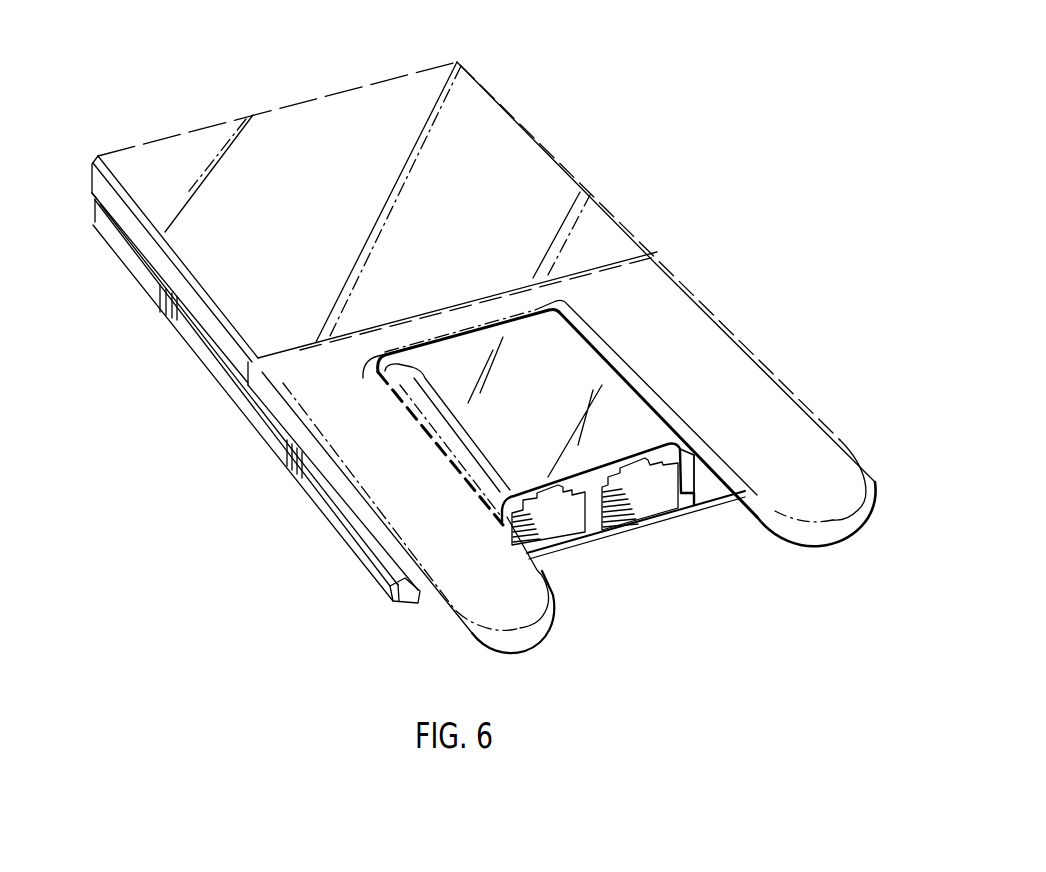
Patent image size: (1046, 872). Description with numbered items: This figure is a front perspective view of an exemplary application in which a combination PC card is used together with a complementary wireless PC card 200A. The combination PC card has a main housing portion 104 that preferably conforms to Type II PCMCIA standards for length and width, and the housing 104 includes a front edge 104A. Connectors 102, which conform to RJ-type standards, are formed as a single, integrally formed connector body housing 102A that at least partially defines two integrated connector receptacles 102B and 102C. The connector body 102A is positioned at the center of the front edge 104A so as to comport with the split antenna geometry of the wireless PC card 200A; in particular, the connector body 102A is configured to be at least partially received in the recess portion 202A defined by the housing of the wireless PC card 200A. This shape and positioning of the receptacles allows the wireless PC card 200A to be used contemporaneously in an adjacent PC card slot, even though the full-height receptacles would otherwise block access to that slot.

The wireless PC card 200A is at (191, 116).
The recess portion 202A is at (729, 540).
The main housing portion 104 is at (232, 396).
The front edge 104A is at (404, 592).
The connector receptacle 102 is at (637, 565).
The connector body housing 102A is at (567, 368).
The integrated connector receptacle 102B is at (562, 533).
The integrated connector receptacle 102C is at (655, 498).